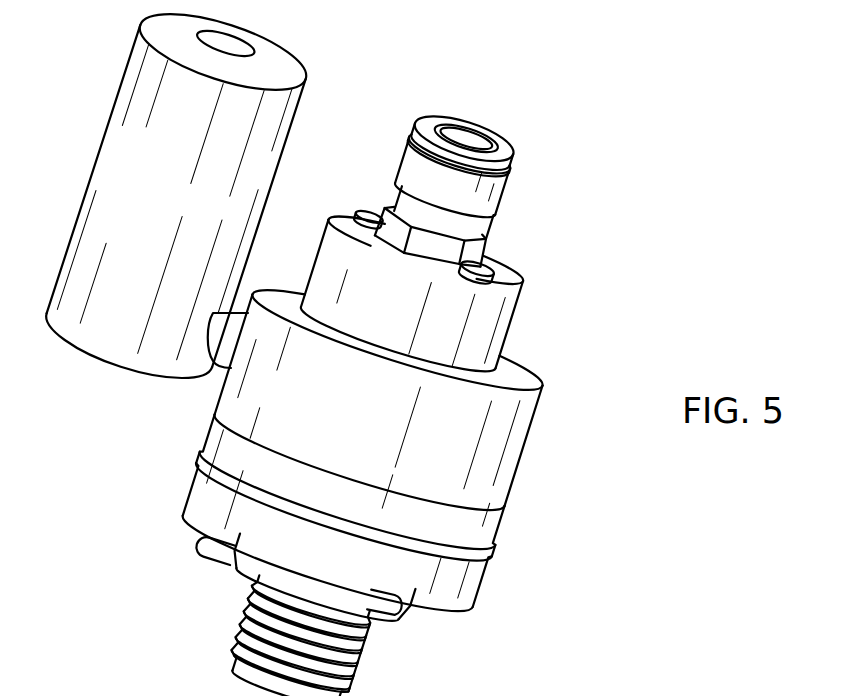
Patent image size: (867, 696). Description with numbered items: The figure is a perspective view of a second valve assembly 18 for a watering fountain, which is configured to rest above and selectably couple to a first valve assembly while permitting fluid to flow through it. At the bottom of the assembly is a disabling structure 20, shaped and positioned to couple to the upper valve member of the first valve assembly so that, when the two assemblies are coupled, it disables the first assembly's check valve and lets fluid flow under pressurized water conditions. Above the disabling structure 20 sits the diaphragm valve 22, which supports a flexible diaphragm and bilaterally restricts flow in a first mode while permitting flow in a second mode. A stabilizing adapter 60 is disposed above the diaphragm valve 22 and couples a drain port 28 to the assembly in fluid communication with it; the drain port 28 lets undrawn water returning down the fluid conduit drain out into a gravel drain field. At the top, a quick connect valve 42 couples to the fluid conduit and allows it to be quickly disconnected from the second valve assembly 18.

The second valve assembly 18 is at (413, 401).
The disabling structure 20 is at (458, 587).
The diaphragm valve 22 is at (478, 527).
The drain port 28 is at (113, 173).
The quick connect valve 42 is at (413, 167).
The stabilizing adapter 60 is at (500, 462).